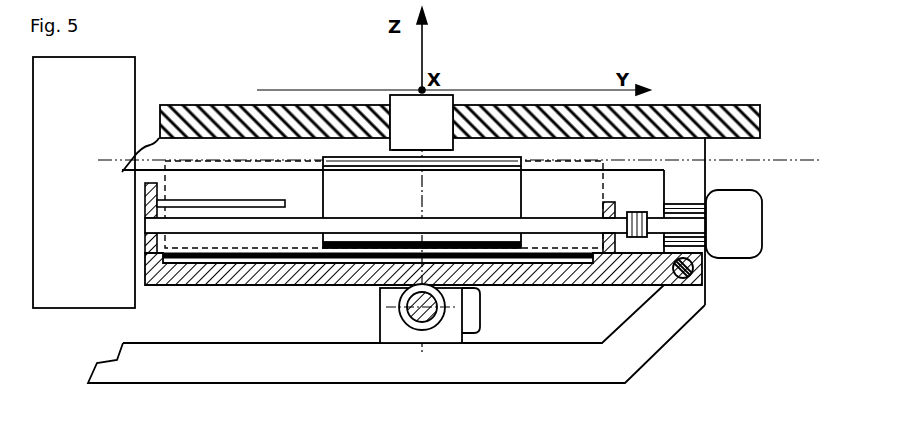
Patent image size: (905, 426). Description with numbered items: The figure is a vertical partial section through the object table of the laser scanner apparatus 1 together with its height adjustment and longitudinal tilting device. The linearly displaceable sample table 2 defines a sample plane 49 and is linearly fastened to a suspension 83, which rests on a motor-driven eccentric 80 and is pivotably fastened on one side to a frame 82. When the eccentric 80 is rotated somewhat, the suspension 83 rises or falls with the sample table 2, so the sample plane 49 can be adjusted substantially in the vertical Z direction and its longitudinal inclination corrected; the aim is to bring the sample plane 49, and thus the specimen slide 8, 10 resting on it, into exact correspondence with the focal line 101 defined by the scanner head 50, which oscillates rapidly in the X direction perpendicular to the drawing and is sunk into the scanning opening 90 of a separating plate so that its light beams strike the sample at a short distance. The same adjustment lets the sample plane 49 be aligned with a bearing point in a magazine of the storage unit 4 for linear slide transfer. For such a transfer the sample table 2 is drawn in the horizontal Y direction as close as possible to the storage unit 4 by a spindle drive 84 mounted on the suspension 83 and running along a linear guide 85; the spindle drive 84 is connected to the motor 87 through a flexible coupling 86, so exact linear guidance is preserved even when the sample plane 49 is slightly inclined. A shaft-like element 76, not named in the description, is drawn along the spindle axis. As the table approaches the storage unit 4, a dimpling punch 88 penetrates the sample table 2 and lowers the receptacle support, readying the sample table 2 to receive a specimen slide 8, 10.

The laser scanner apparatus 1 is at (705, 76).
The sample table 2 is at (351, 208).
The storage unit 4 is at (104, 235).
The specimen slide 8 is at (422, 183).
The specimen slide 10 is at (448, 158).
The sample plane 49 is at (105, 158).
The scanner head 50 is at (438, 108).
The spindle / lead screw 76 is at (424, 218).
The eccentric 80 is at (398, 313).
The frame 82 is at (242, 378).
The suspension 83 is at (238, 287).
The spindle drive 84 is at (592, 227).
The linear guide 85 is at (500, 257).
The flexible coupling 86 is at (641, 214).
The motor 87 is at (749, 233).
The dimpling punch 88 is at (222, 204).
The scanning opening 90 is at (393, 142).
The focal line 101 is at (447, 124).